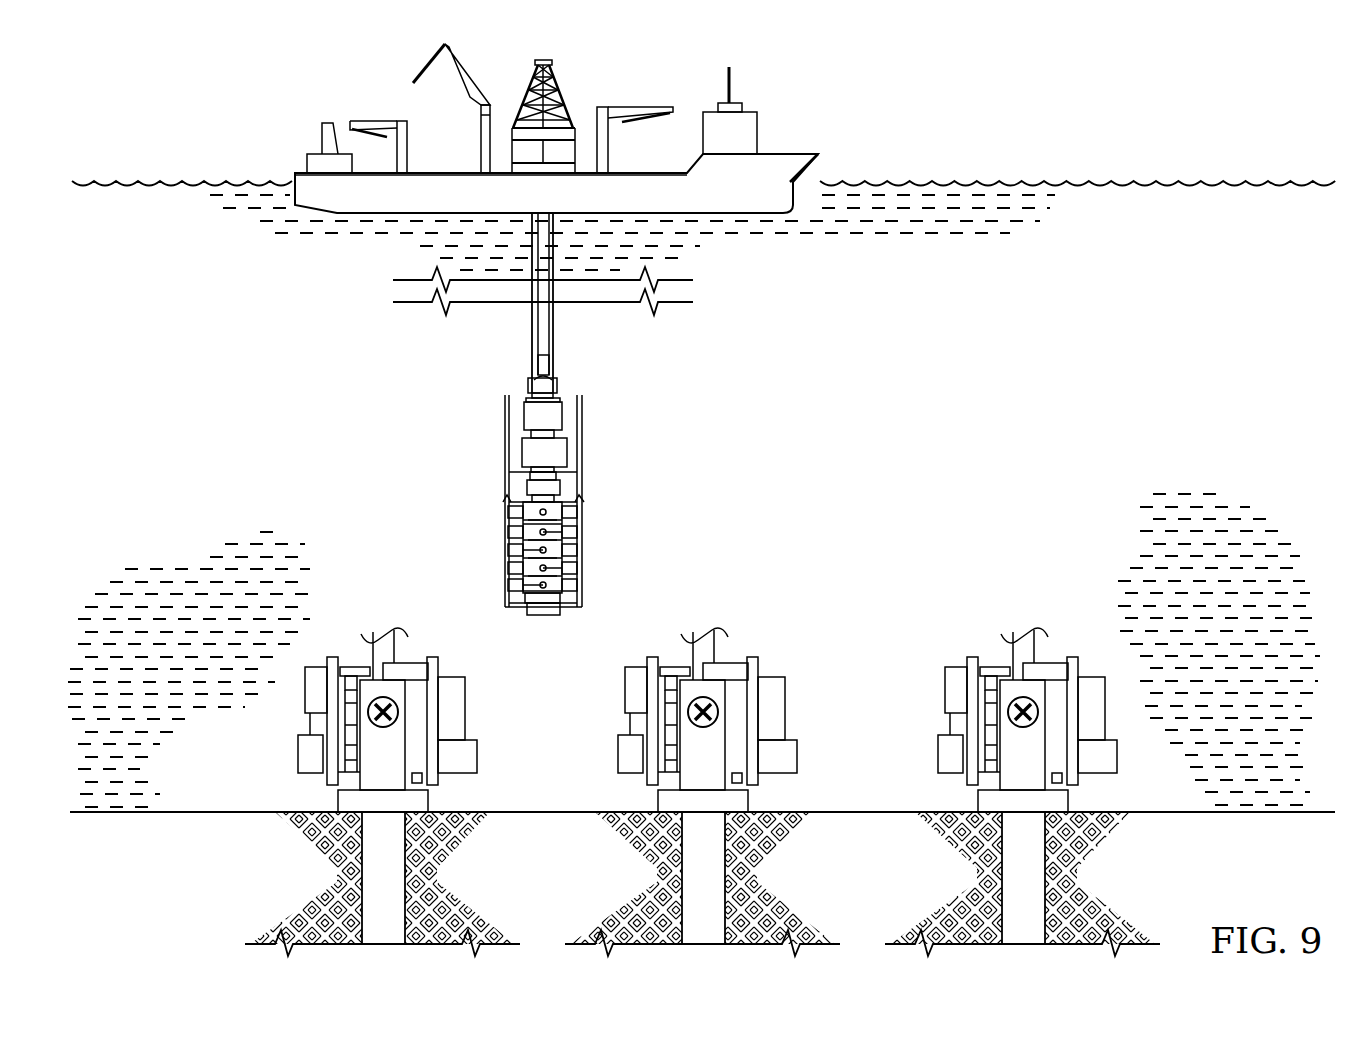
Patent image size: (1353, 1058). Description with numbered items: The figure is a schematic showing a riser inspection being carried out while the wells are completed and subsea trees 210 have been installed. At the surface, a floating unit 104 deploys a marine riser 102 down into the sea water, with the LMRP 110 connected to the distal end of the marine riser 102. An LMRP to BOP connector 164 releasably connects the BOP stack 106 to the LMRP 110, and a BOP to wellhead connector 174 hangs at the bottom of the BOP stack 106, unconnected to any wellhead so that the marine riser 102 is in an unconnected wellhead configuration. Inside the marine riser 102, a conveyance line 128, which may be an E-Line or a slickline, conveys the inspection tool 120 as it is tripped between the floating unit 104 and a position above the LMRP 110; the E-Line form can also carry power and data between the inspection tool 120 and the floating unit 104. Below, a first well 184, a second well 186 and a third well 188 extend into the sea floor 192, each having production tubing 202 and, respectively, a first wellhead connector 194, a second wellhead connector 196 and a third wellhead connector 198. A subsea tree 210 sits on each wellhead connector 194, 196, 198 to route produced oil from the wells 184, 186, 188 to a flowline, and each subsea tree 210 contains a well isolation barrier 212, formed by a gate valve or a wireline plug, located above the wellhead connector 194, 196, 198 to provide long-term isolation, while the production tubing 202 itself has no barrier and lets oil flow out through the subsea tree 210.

The floating unit 104 is at (788, 152).
The marine riser 102 is at (532, 338).
The conveyance line 128 is at (546, 332).
The inspection tool 120 is at (540, 366).
The LMRP 110 is at (490, 398).
The LMRP to BOP connector 164 is at (555, 487).
The BOP stack 106 is at (490, 502).
The BOP to wellhead connector 174 is at (545, 617).
The sea floor 192 is at (213, 812).
The subsea tree 210 is at (361, 608).
The well isolation barrier 212 is at (389, 698).
The first wellhead connector 194 is at (340, 797).
The second wellhead connector 196 is at (740, 798).
The third wellhead connector 198 is at (1060, 798).
The first well 184 is at (268, 848).
The second well 186 is at (590, 848).
The third well 188 is at (1138, 846).
The production tubing 202 is at (362, 898).